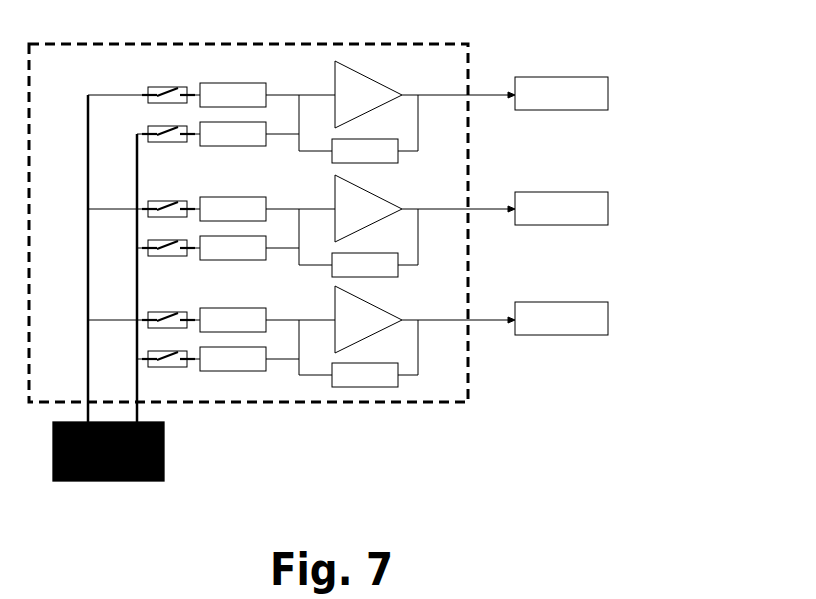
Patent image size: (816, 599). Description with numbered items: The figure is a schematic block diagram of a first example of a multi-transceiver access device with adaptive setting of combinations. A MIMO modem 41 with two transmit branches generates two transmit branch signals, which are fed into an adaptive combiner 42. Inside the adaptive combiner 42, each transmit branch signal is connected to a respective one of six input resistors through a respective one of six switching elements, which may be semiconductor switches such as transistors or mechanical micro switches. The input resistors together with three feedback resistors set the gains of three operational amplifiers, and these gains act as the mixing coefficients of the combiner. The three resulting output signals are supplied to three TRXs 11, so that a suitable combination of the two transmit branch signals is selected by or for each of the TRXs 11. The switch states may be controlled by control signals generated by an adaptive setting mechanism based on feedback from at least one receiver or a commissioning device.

The TRX 11 is at (593, 174).
The MIMO modem 41 is at (162, 457).
The adaptive combiner 42 is at (272, 260).